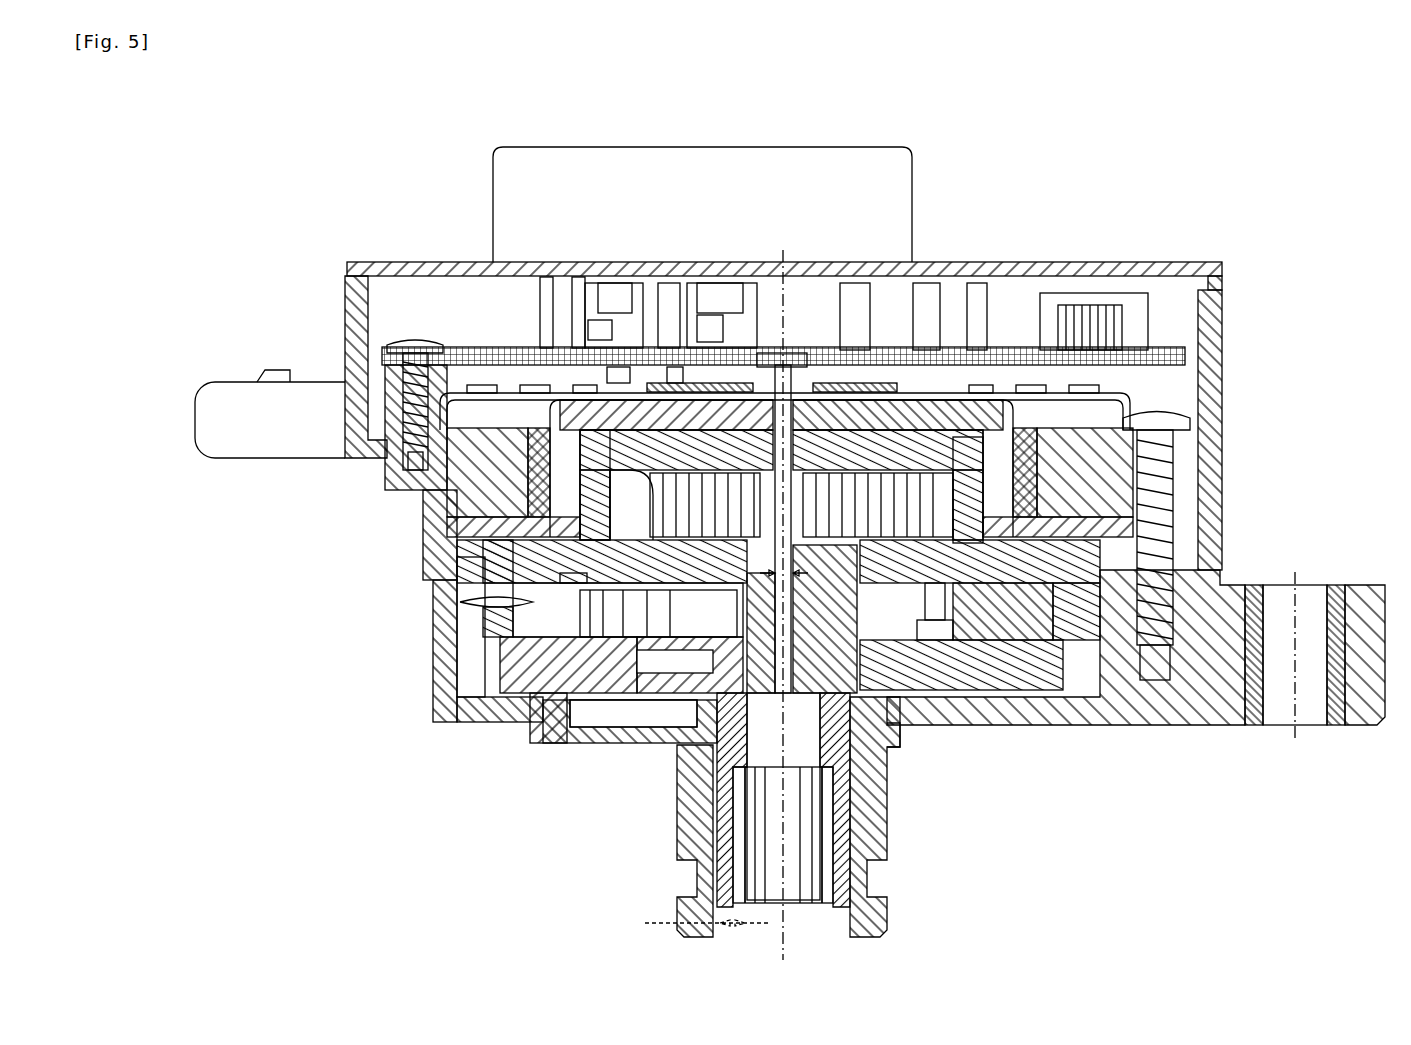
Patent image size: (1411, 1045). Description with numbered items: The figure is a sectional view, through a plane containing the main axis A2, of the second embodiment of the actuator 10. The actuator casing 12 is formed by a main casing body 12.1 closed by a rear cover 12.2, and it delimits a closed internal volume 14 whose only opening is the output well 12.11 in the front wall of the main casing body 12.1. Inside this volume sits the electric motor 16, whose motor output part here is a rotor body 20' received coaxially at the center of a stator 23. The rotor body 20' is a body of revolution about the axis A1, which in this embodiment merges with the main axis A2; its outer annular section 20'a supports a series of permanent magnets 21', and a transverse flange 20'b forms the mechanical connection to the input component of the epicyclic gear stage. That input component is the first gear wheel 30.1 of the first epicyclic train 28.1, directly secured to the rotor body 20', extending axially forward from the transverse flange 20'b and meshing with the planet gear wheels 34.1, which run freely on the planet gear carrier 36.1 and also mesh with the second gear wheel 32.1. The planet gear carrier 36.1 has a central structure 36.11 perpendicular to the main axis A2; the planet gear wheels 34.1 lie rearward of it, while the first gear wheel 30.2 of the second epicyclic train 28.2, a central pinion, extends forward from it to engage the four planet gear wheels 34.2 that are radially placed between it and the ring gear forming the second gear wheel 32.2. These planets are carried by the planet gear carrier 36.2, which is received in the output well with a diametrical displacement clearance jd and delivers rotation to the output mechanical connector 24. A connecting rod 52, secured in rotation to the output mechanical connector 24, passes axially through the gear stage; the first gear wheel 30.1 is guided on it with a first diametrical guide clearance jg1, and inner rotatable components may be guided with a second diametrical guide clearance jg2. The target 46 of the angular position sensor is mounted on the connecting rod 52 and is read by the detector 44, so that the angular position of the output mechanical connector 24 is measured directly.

The actuator 10 is at (1344, 173).
The actuator casing 12 is at (770, 358).
The main casing body 12.1 is at (1210, 318).
The rear cover 12.2 is at (1200, 270).
The output well 12.11 is at (880, 785).
The internal volume 14 is at (1082, 668).
The electric motor 16 is at (892, 532).
The rotor body 20' is at (1079, 289).
The outer annular section 20'a is at (877, 546).
The transverse flange 20'b is at (923, 329).
The permanent magnets 21' is at (1205, 546).
The stator 23 is at (1170, 395).
The output mechanical connector 24 is at (855, 838).
The first epicyclic train 28.1 is at (790, 325).
The second epicyclic train 28.2 is at (677, 670).
The first gear wheel of the first epicyclic train 30.1 is at (820, 480).
The first gear wheel of the second epicyclic train 30.2 is at (500, 585).
The second gear wheel of the first epicyclic train 32.1 is at (573, 417).
The second gear wheel of the second epicyclic train 32.2 is at (533, 603).
The planet gear wheels of the first epicyclic train 34.1 is at (637, 463).
The planet gear wheels of the second epicyclic train 34.2 is at (690, 565).
The planet gear carrier of the first epicyclic train 36.1 is at (700, 500).
The central structure 36.11 is at (701, 265).
The planet gear carrier of the second epicyclic train 36.2 is at (626, 718).
The detector 44 is at (875, 355).
The target 46 is at (760, 503).
The connecting rod 52 is at (895, 740).
The axis of rotation of the motor output part A1 is at (790, 865).
The main axis A2 is at (858, 835).
The first diametrical guide clearance jg1 is at (750, 447).
The second diametrical guide clearance jg2 is at (797, 561).
The diametrical displacement clearance jd is at (707, 912).